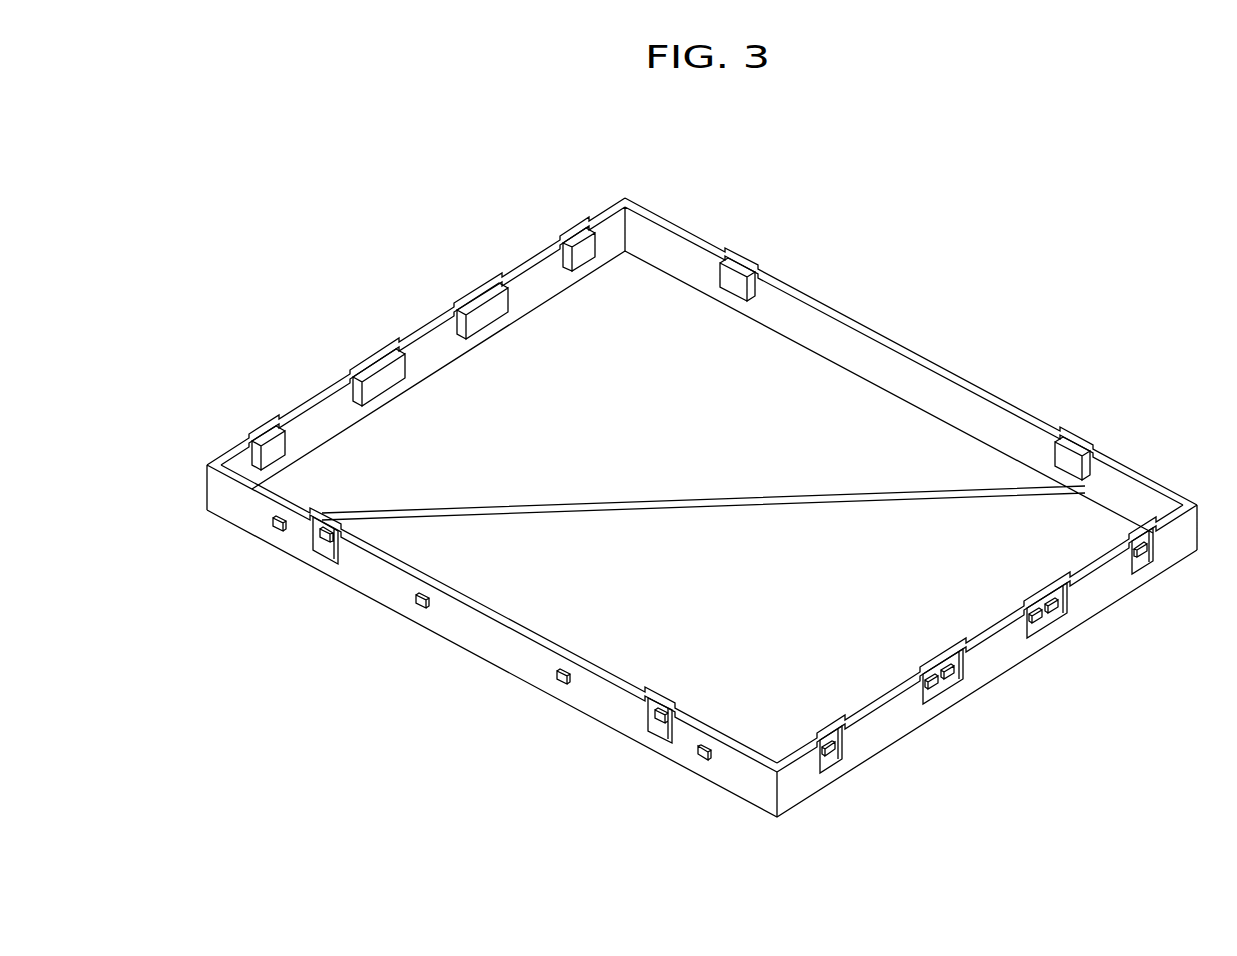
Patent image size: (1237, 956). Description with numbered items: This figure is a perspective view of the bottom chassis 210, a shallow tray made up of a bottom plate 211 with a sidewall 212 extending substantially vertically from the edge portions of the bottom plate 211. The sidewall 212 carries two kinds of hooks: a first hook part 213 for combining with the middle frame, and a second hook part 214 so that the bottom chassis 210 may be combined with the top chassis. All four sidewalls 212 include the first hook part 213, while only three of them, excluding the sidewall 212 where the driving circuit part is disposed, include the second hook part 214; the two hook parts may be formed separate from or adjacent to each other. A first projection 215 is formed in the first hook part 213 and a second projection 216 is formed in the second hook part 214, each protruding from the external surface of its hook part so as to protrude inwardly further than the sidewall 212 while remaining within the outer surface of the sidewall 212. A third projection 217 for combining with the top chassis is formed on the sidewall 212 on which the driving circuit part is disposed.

The bottom chassis 210 is at (751, 151).
The bottom plate 211 is at (506, 588).
The sidewall 212 is at (513, 652).
The first hook part 213 is at (833, 758).
The second hook part 214 is at (933, 697).
The first projection 215 is at (837, 748).
The second projection 216 is at (943, 685).
The third projection 217 is at (697, 751).